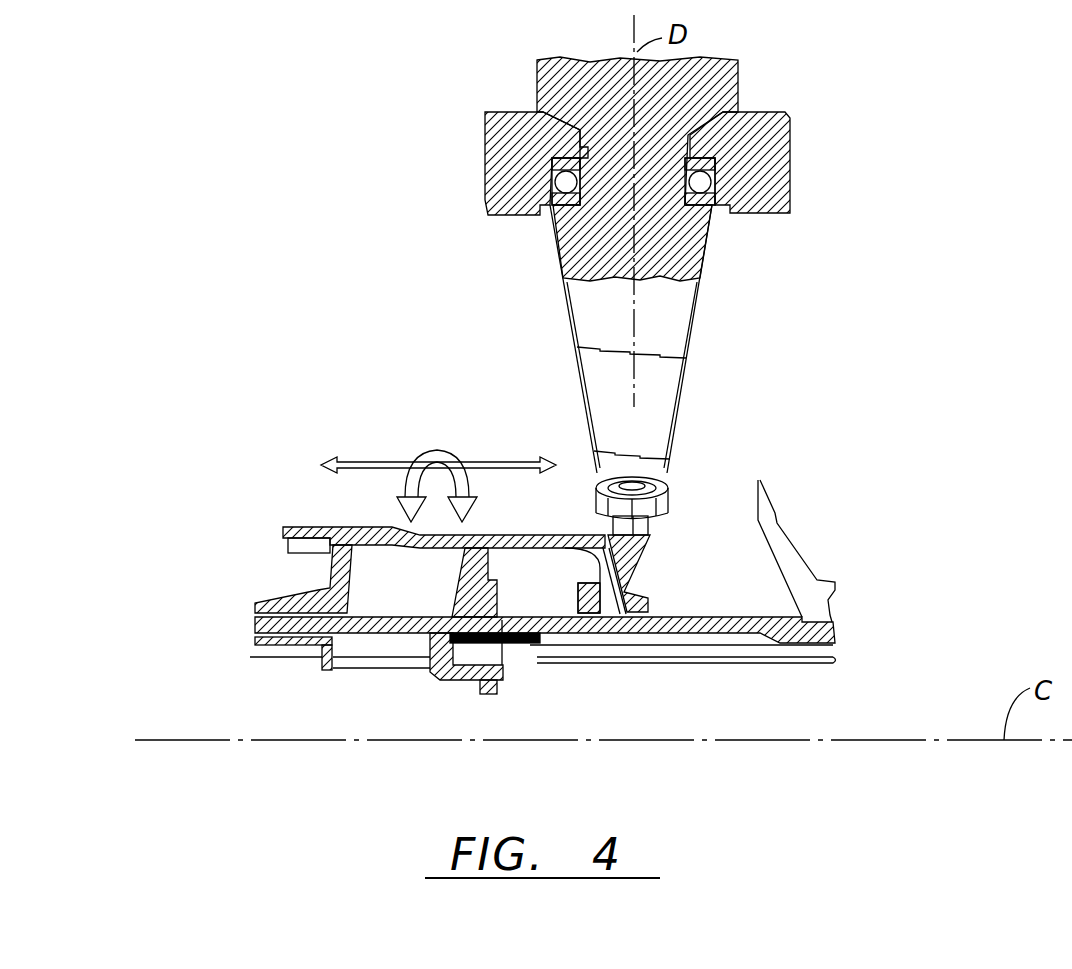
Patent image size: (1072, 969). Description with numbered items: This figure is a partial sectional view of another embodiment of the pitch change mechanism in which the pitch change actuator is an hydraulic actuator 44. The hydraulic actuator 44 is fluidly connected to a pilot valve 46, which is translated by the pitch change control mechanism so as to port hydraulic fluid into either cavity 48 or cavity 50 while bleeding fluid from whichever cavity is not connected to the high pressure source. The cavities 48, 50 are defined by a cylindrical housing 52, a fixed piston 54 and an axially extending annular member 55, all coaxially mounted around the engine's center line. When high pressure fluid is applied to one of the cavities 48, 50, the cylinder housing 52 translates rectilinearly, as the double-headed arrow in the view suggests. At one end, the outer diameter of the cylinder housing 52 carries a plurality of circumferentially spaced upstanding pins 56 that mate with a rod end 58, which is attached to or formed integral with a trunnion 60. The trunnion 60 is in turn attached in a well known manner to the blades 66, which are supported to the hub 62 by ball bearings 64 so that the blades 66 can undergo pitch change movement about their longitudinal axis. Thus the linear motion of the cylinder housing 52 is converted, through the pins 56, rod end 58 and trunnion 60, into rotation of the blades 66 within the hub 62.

The hydraulic actuator 44 is at (306, 490).
The pilot valve 46 is at (523, 667).
The cavity 48 is at (457, 628).
The cavity 50 is at (505, 630).
The cylindrical housing 52 is at (300, 528).
The fixed piston 54 is at (492, 546).
The axially extending annular member 55 is at (720, 630).
The upstanding pins 56 is at (650, 527).
The rod end 58 is at (665, 495).
The trunnion 60 is at (690, 357).
The hub 62 is at (497, 140).
The ball bearings 64 is at (558, 205).
The blades 66 is at (552, 83).